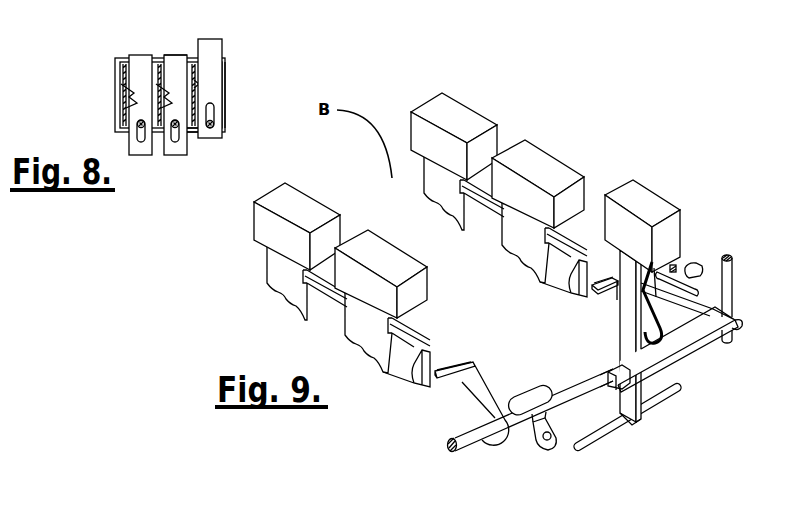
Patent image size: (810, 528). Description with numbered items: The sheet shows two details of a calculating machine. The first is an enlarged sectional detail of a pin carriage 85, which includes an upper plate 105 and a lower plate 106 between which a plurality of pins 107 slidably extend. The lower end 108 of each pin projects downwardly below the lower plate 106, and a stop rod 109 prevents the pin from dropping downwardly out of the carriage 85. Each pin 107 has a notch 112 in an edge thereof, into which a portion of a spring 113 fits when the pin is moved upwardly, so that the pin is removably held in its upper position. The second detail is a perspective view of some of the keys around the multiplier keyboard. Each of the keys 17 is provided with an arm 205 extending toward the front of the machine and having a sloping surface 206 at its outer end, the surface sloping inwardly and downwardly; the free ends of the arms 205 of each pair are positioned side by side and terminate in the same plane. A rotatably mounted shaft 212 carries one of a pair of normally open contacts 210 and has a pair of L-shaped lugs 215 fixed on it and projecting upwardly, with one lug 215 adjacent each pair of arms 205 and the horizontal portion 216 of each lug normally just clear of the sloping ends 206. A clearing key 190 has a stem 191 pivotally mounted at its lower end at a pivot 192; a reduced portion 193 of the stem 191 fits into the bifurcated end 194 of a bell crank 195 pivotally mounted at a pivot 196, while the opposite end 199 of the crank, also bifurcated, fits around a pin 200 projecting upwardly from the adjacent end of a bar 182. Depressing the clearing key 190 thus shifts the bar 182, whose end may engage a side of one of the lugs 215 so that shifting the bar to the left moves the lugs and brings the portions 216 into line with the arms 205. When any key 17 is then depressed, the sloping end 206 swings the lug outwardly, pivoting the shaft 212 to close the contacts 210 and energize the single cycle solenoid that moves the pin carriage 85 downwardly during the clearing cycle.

In FIG. 8, the pin carriage 85 is at (118, 68).
In FIG. 8, the upper plate 105 is at (155, 62).
In FIG. 8, the pin 107 is at (173, 60).
In FIG. 8, the spring 113 is at (133, 100).
In FIG. 8, the notch 112 is at (132, 102).
In FIG. 8, the stop rod 109 is at (208, 122).
In FIG. 8, the lower plate 106 is at (188, 143).
In FIG. 8, the lower end of pin 108 is at (180, 157).
In FIG. 9, the key 17 is at (360, 230).
In FIG. 9, the arm 205 is at (350, 337).
In FIG. 9, the sloping surface 206 is at (407, 382).
In FIG. 9, the horizontal portion of lug 216 is at (597, 290).
In FIG. 9, the L-shaped lug 215 is at (638, 318).
In FIG. 9, the stem 191 is at (630, 333).
In FIG. 9, the actuating rod end 193 is at (615, 370).
In FIG. 9, the bifurcated end of bell crank 194 is at (615, 383).
In FIG. 9, the contacts 210 is at (546, 410).
In FIG. 9, the shaft 212 is at (461, 450).
In FIG. 9, the clearing key 190 is at (645, 200).
In FIG. 9, the bar 182 is at (652, 277).
In FIG. 9, the pin 200 is at (673, 265).
In FIG. 9, the opposite end of bell crank 199 is at (690, 262).
In FIG. 9, the pivot 196 is at (725, 313).
In FIG. 9, the bell crank 195 is at (687, 347).
In FIG. 9, the pivot 192 is at (632, 427).